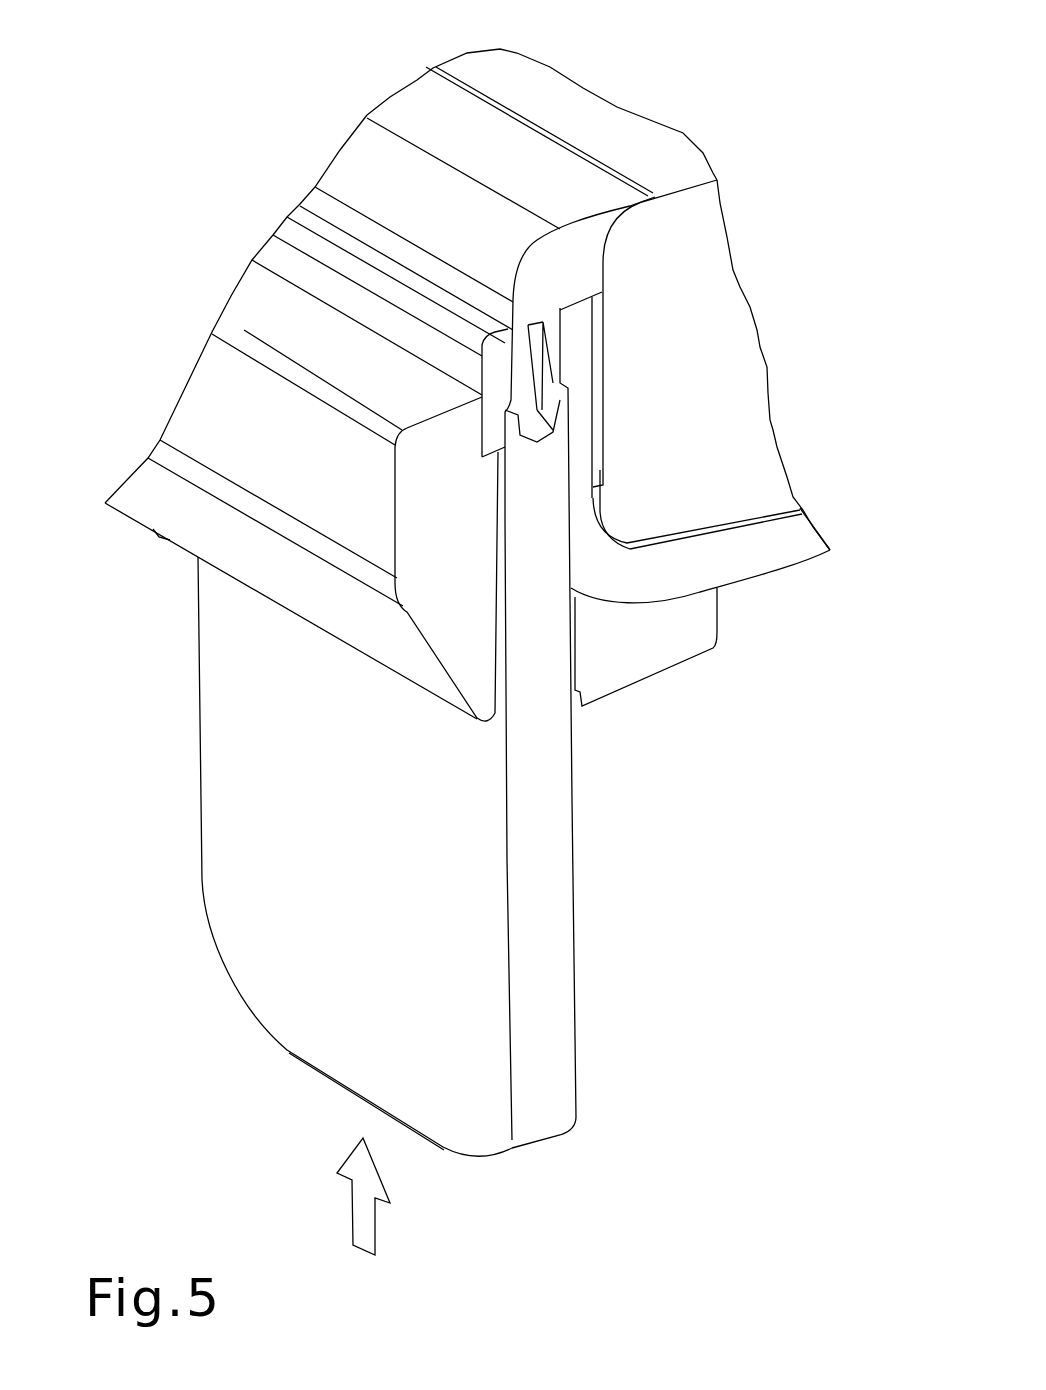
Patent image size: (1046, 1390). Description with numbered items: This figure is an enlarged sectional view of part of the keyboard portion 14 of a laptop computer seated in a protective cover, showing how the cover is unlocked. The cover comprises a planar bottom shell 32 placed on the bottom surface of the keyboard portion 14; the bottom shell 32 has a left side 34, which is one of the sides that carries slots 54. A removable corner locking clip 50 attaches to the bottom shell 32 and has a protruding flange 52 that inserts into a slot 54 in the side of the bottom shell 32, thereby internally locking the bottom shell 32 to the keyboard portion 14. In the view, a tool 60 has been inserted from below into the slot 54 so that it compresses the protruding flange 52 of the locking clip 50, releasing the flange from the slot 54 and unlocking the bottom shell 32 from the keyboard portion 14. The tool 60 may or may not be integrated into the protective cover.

The keyboard portion 14 is at (707, 238).
The bottom shell 32 is at (760, 562).
The left side 34 is at (207, 408).
The removable corner locking clip 50 is at (415, 93).
The protruding flange 52 is at (523, 362).
The slot 54 is at (507, 657).
The tool 60 is at (275, 960).